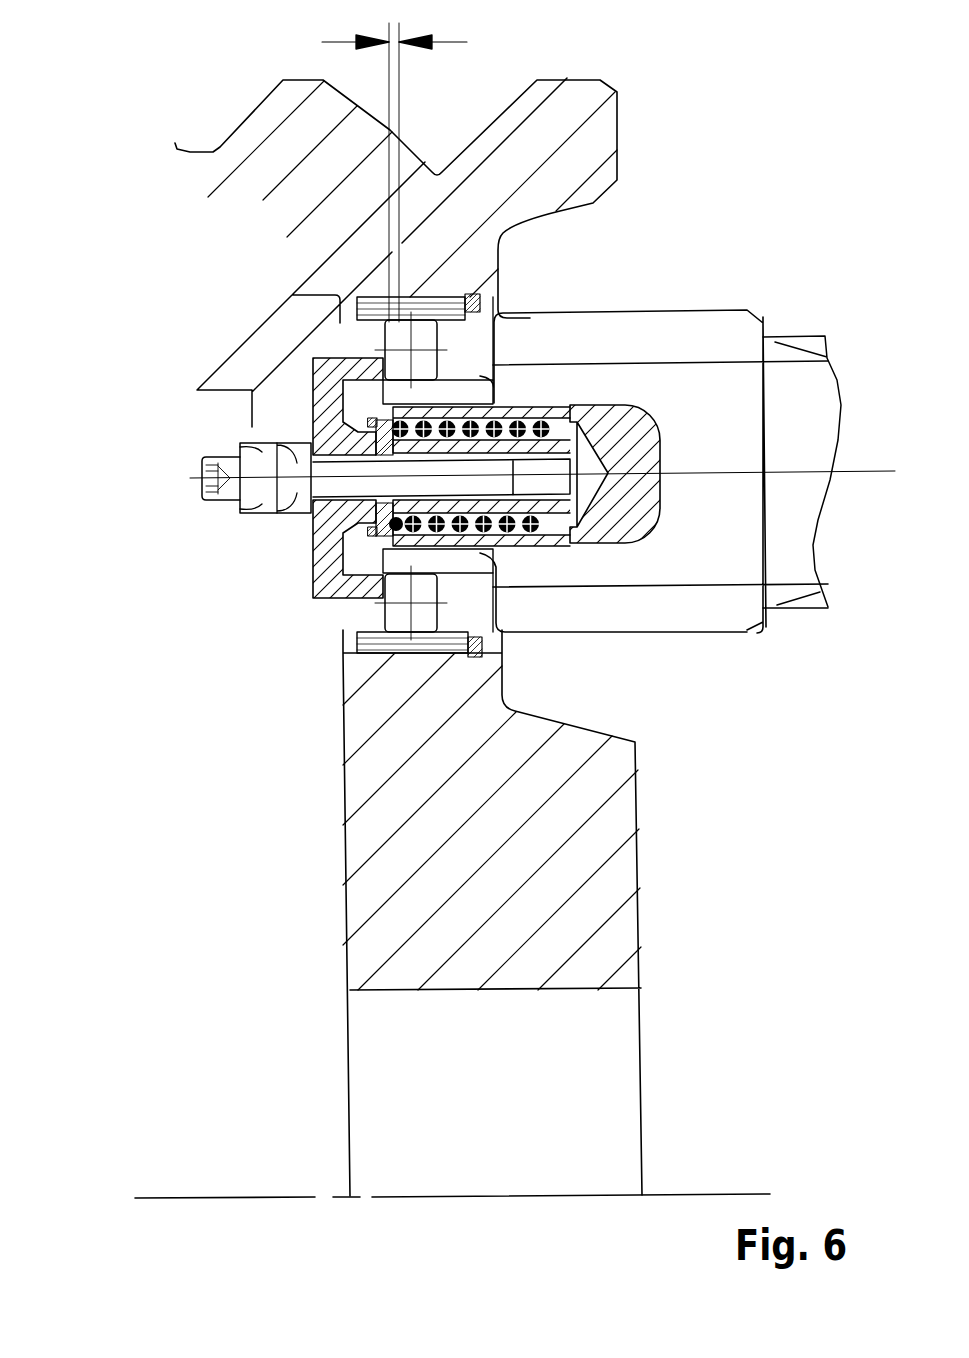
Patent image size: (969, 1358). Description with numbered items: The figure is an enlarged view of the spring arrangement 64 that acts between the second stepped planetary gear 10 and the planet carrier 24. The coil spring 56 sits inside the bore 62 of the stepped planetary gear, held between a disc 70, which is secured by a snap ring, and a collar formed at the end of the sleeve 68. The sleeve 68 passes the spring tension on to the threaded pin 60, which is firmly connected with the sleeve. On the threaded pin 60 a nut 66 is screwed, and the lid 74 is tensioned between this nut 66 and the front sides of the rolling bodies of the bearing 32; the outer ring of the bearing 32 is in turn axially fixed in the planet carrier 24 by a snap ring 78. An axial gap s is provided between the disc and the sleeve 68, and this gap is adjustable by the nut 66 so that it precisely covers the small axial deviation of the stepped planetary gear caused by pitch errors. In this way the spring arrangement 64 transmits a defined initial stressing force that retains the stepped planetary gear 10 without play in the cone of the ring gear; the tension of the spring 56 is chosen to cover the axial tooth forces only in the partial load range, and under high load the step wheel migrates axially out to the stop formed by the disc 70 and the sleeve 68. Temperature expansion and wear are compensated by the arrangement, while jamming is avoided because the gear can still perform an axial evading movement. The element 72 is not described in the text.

The second stepped planetary gear 10 is at (653, 343).
The planet carrier 24 is at (615, 92).
The bearing 32 is at (432, 612).
The coil spring 56 is at (507, 528).
The threaded pin 60 is at (357, 499).
The bore 62 is at (585, 462).
The spring arrangement 64 is at (208, 718).
The nut 66 is at (296, 463).
The sleeve 68 is at (547, 507).
The disc 70 is at (313, 568).
The nut 72 is at (312, 432).
The lid 74 is at (466, 713).
The snap ring 78 is at (500, 306).